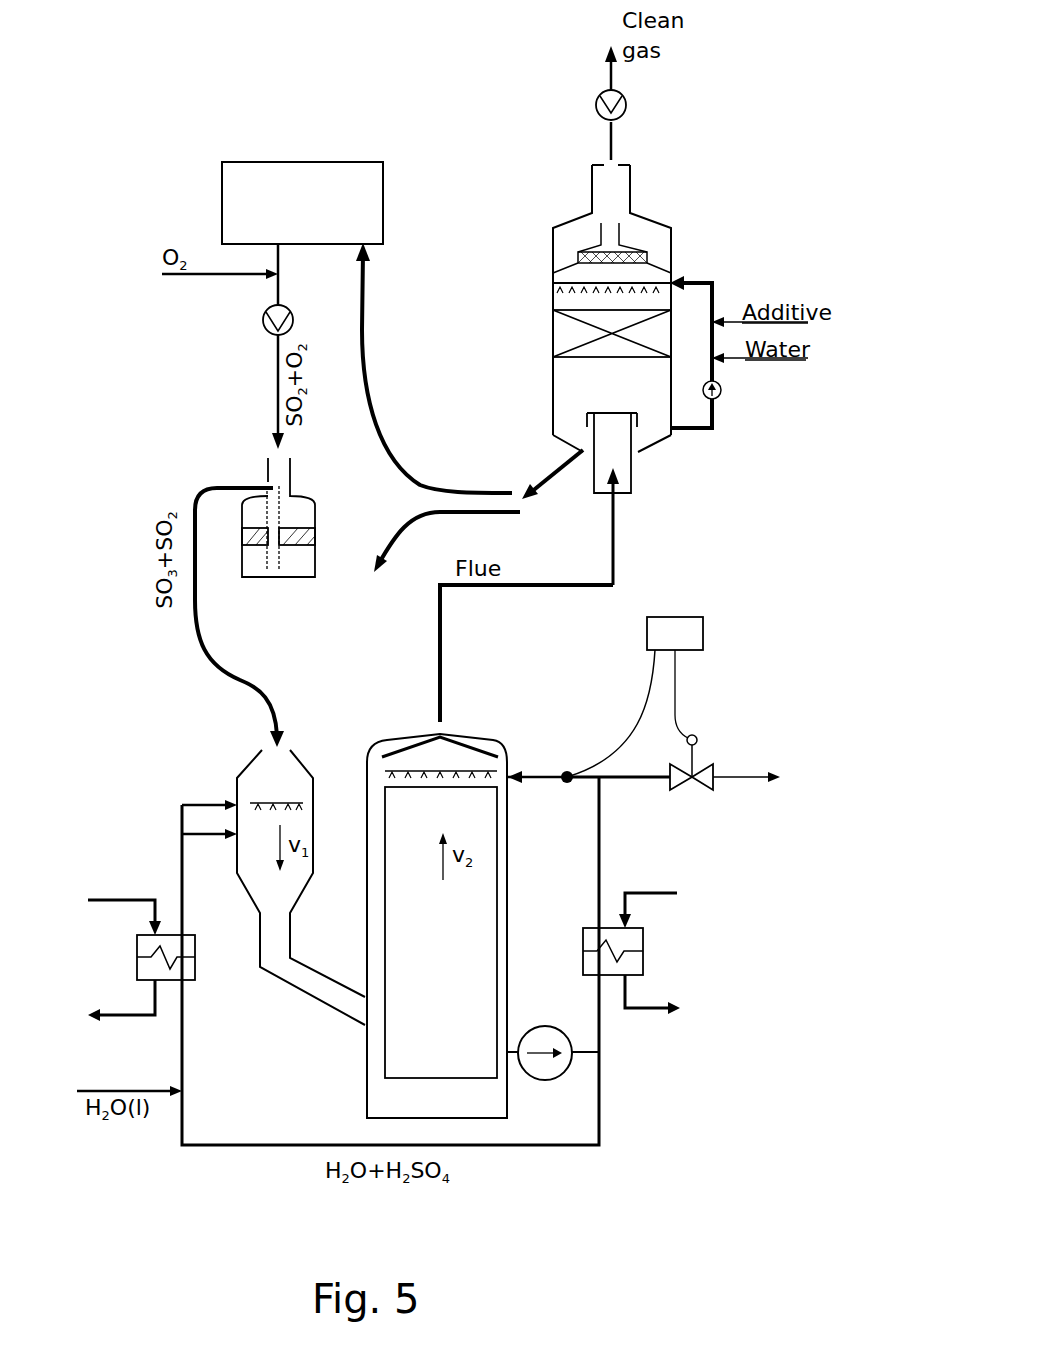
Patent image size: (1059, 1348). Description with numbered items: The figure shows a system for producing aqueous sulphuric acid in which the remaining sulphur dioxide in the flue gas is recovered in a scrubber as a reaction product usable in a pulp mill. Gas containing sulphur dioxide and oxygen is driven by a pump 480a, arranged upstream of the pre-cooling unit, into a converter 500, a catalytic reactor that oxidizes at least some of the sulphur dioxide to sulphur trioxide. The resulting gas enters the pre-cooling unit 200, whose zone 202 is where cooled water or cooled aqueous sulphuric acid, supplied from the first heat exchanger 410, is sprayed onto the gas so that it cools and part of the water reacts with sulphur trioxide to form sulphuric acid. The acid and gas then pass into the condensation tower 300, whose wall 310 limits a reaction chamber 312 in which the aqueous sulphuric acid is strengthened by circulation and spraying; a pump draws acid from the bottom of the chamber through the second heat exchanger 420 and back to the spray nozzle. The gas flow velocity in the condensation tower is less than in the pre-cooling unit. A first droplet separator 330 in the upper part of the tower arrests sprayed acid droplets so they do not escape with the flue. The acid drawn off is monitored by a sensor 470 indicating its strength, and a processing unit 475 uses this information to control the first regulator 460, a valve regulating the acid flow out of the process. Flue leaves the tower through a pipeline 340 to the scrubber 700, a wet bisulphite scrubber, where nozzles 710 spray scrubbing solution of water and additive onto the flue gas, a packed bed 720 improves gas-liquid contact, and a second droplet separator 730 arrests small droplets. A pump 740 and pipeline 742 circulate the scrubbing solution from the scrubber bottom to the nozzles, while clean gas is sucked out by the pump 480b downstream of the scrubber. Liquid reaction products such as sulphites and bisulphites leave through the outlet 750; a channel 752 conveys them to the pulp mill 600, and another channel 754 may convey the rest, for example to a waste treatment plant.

The pre-cooling unit 200 is at (339, 765).
The reactor inlet zone 202 is at (266, 858).
The condensation tower 300 is at (483, 733).
The wall 310 is at (508, 888).
The reaction chamber 312 is at (421, 952).
The first droplet separator 330 is at (427, 738).
The pipeline 340 is at (613, 540).
The first heat exchanger 410 is at (137, 968).
The second heat exchanger 420 is at (643, 960).
The first regulator 460 is at (708, 763).
The sensor 470 is at (566, 784).
The processing unit 475 is at (657, 647).
The pump 480a is at (262, 322).
The pump 480b is at (626, 100).
The converter 500 is at (262, 580).
The pulp mill 600 is at (275, 217).
The scrubber 700 is at (528, 228).
The nozzles 710 is at (553, 291).
The packed bed 720 is at (553, 337).
The second droplet separator 730 is at (650, 256).
The pump 740 is at (722, 390).
The pipeline 742 is at (714, 292).
The outlet 750 is at (554, 475).
The channel 752 is at (419, 368).
The channel 754 is at (441, 532).